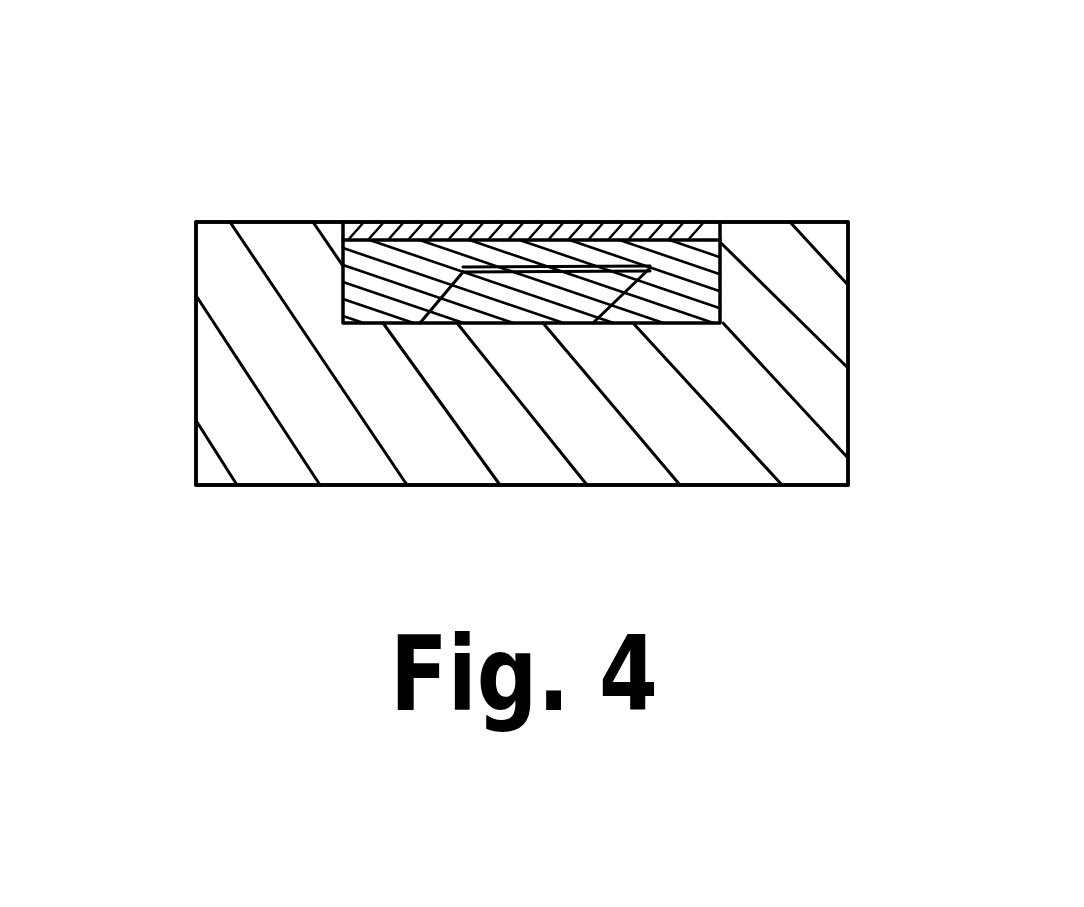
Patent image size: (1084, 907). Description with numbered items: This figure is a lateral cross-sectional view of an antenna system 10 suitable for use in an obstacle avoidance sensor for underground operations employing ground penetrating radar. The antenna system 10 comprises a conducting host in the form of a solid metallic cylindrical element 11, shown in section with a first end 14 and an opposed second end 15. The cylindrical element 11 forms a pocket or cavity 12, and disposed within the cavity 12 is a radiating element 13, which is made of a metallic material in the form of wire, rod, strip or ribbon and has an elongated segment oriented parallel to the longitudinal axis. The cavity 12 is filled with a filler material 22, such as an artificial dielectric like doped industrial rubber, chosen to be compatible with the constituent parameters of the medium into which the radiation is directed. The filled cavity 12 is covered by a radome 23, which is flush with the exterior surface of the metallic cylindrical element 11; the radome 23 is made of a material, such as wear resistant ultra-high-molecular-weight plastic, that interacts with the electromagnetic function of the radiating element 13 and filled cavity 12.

The antenna system 10 is at (799, 100).
The solid metallic cylindrical element 11 is at (250, 221).
The cavity 12 is at (677, 323).
The radiating element 13 is at (533, 268).
The first end 14 is at (196, 322).
The second end 15 is at (848, 343).
The filler material 22 is at (390, 268).
The radome 23 is at (620, 221).